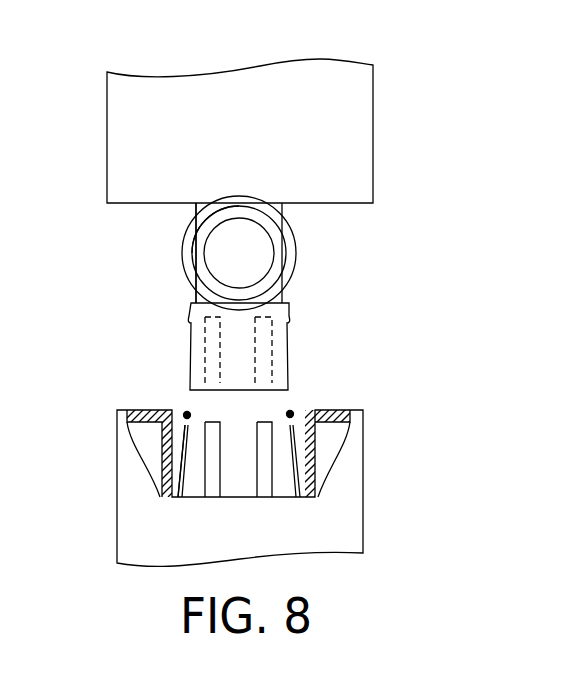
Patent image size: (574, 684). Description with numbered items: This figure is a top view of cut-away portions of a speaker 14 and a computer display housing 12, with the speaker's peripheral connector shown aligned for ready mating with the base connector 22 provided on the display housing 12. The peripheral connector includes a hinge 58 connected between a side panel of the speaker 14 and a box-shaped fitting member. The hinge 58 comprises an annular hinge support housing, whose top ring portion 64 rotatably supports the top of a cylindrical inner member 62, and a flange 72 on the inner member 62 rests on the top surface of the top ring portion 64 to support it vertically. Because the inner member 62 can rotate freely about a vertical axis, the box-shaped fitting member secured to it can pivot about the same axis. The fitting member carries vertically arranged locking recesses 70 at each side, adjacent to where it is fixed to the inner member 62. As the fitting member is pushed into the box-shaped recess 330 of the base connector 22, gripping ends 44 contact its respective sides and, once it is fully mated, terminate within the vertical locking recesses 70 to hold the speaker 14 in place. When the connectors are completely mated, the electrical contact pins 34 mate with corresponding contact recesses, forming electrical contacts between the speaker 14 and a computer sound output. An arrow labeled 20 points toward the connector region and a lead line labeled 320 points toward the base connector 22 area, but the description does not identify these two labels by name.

The computer display housing 12 is at (117, 485).
The speaker 14 is at (138, 92).
The connector assembly 20 is at (353, 298).
The base connector 22 is at (320, 433).
The electrical contact pins 34 is at (264, 488).
The gripping ends 44 is at (192, 418).
The hinge 58 is at (290, 224).
The cylindrical inner member 62 is at (203, 247).
The top ring portion 64 is at (292, 250).
The vertical locking recesses 70 is at (189, 313).
The flange 72 is at (196, 265).
The right contact spring 320 is at (185, 460).
The box-shaped recess 330 is at (199, 419).